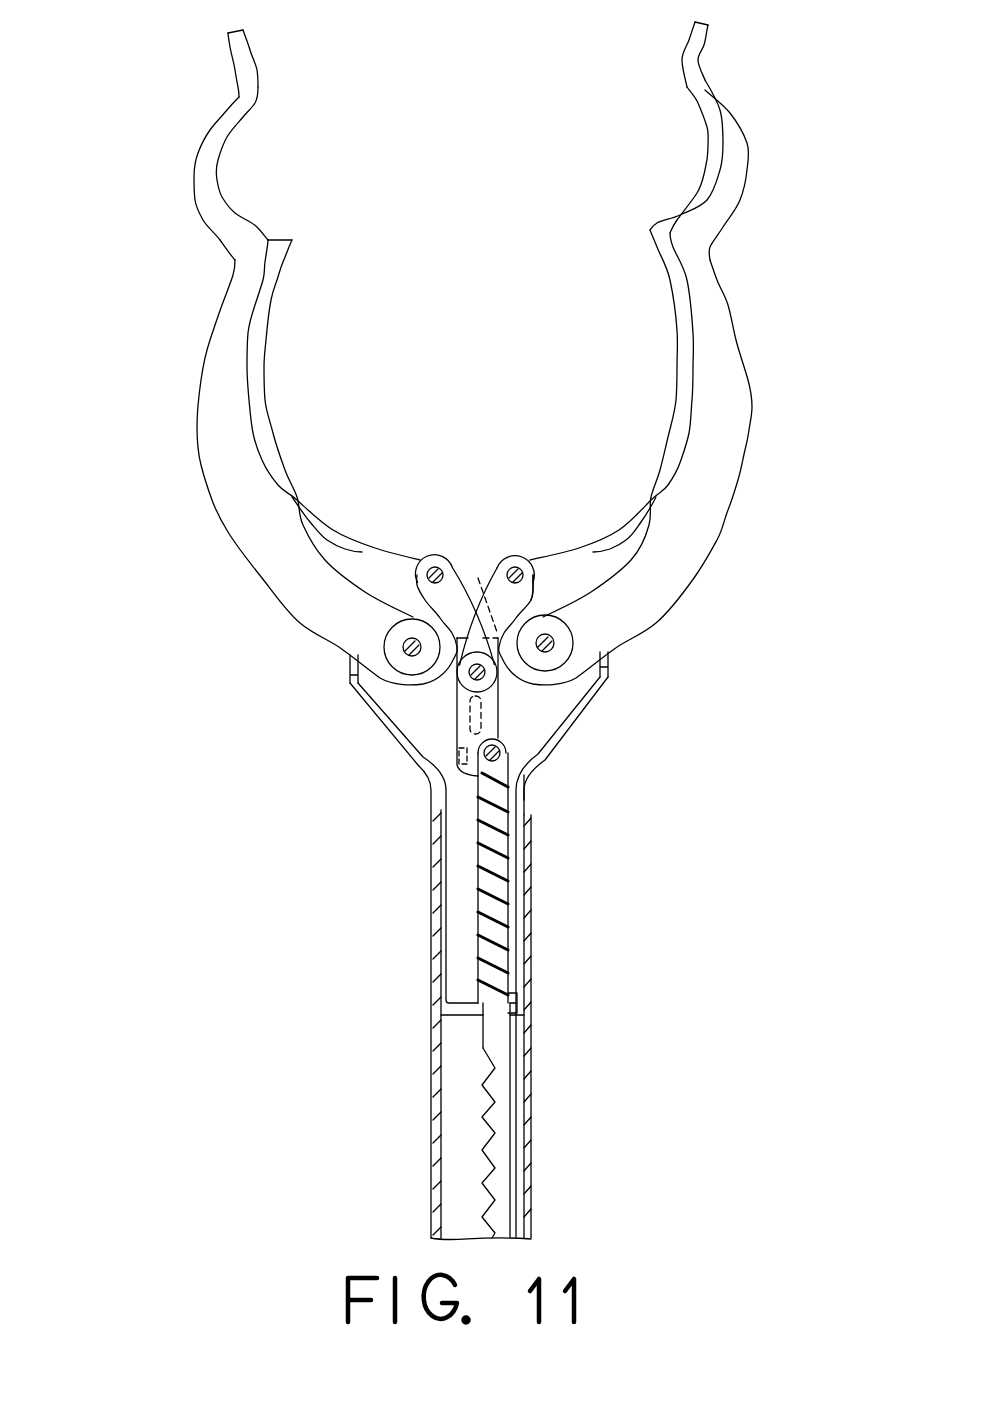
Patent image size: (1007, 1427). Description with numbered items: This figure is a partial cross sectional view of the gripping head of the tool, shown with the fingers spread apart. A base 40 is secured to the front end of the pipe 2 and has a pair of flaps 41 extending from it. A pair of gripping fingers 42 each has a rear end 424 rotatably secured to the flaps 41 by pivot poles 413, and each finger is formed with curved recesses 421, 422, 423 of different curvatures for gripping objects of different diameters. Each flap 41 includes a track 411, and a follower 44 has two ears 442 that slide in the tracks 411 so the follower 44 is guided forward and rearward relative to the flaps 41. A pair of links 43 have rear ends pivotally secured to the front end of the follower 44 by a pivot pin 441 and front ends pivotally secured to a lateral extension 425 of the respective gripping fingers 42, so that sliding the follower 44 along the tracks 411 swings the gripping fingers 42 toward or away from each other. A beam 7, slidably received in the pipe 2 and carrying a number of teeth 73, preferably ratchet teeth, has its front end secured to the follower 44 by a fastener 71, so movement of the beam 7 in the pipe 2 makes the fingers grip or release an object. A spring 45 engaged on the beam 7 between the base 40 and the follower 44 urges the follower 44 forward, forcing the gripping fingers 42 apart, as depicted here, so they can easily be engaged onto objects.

The pipe 2 is at (528, 1130).
The beam 7 is at (497, 1053).
The base 40 is at (520, 782).
The flaps 41 is at (600, 705).
The gripping fingers 42 is at (217, 377).
The links 43 is at (433, 562).
The follower 44 is at (475, 774).
The spring 45 is at (477, 870).
The fastener 71 is at (513, 768).
The teeth 73 is at (495, 1112).
The track 411 is at (500, 712).
The pivot poles 413 is at (405, 643).
The curved recess 421 is at (265, 365).
The curved recess 422 is at (235, 180).
The curved recess 423 is at (252, 48).
The rear end 424 is at (607, 662).
The lateral extension 425 is at (545, 577).
The pivot pin 441 is at (352, 682).
The ears 442 is at (486, 710).